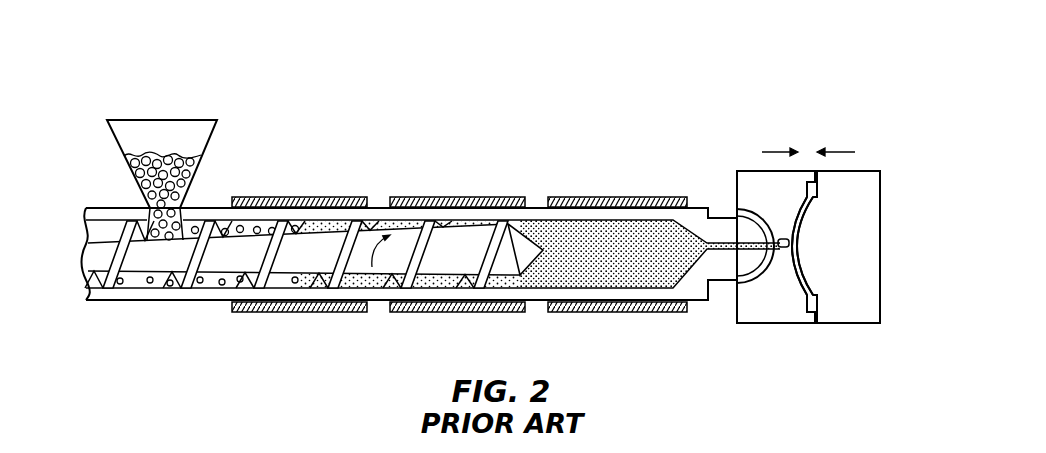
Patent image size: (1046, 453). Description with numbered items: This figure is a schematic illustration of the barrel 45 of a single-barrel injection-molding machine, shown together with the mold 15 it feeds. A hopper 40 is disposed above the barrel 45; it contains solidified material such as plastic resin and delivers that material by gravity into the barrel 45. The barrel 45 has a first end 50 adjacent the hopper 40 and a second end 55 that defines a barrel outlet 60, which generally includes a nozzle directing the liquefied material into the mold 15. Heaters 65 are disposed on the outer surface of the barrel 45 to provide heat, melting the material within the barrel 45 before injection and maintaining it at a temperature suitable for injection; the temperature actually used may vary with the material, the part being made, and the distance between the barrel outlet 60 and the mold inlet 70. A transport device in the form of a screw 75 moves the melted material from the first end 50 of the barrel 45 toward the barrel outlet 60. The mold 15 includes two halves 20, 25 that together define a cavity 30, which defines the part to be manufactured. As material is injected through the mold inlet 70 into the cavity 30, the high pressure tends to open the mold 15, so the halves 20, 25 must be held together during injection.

The mold 15 is at (872, 139).
The mold half 20 is at (750, 178).
The mold half 25 is at (867, 203).
The cavity 30 is at (797, 190).
The hopper 40 is at (183, 127).
The barrel 45 is at (378, 210).
The first end 50 is at (108, 220).
The second end 55 is at (695, 210).
The barrel outlet 60 is at (780, 253).
The heaters 65 is at (257, 197).
The mold inlet 70 is at (790, 242).
The screw 75 is at (158, 262).